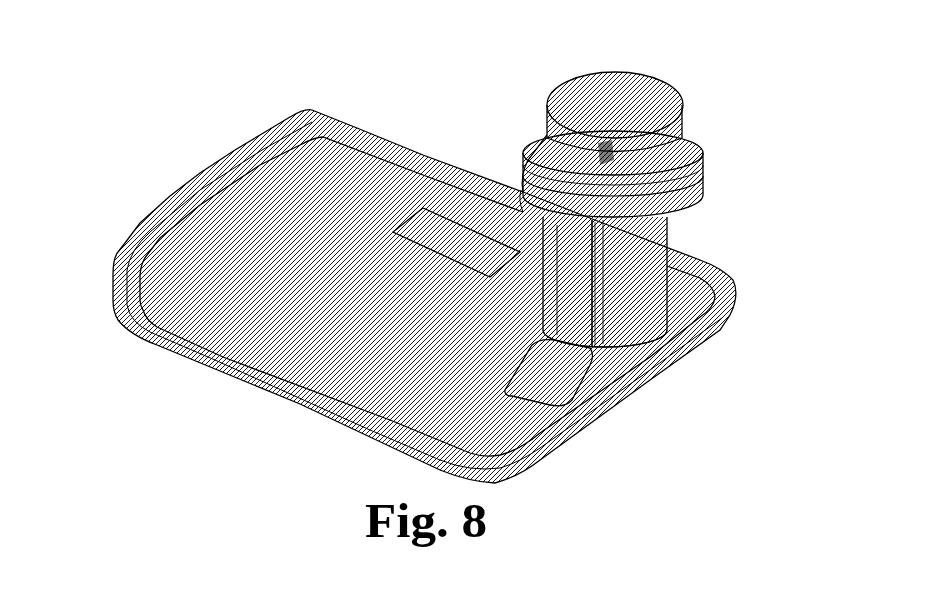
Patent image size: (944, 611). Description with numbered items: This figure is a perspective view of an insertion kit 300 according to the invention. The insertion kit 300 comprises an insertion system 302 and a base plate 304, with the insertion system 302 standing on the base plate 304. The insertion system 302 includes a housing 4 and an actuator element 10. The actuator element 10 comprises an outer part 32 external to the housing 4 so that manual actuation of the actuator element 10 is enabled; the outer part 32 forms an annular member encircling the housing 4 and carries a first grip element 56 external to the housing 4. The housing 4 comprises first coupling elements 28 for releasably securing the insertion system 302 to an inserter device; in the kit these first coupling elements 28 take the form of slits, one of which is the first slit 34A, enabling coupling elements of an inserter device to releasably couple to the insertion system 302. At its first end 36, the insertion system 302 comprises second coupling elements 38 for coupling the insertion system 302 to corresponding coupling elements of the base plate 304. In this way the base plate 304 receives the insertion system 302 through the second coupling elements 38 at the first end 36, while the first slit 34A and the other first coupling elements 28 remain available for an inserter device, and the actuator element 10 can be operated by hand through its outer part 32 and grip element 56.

The insertion kit 300 is at (189, 109).
The insertion system 302 is at (547, 122).
The base plate 304 is at (193, 213).
The housing 4 is at (613, 87).
The first coupling element 28 is at (600, 147).
The actuator element 10 is at (690, 150).
The first grip element 56 is at (697, 153).
The outer part 32 is at (700, 172).
The first slit 34A is at (600, 268).
The first end 36 is at (590, 345).
The second coupling element 38 is at (590, 345).